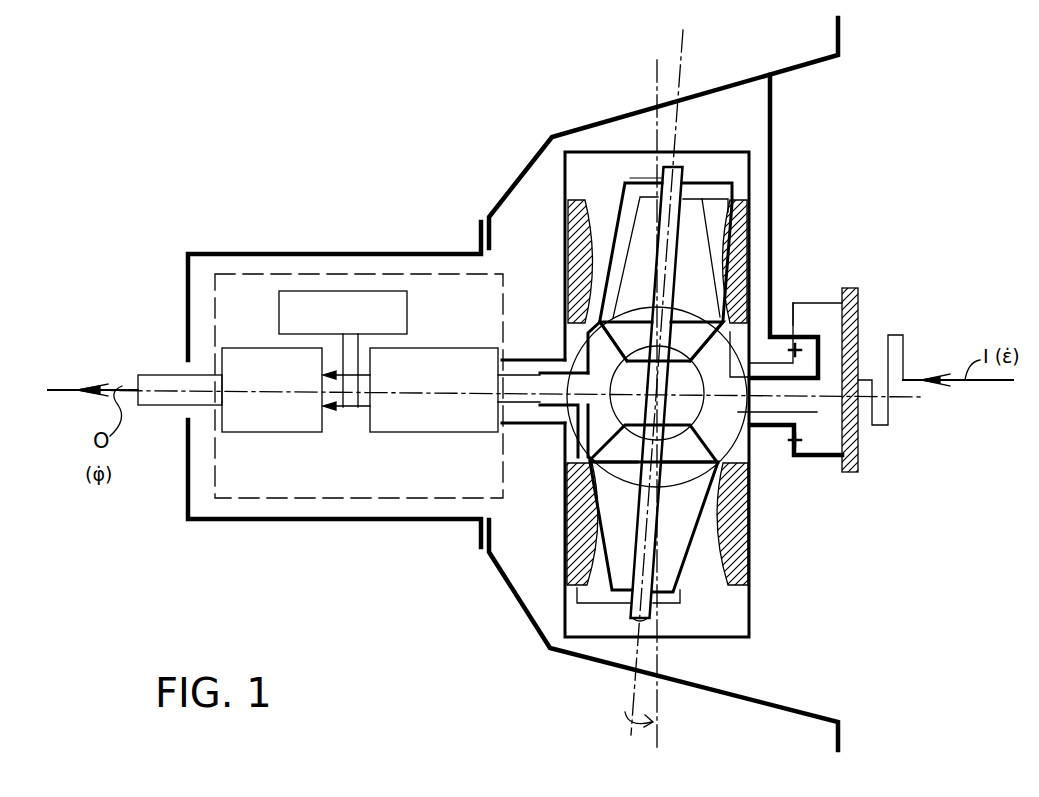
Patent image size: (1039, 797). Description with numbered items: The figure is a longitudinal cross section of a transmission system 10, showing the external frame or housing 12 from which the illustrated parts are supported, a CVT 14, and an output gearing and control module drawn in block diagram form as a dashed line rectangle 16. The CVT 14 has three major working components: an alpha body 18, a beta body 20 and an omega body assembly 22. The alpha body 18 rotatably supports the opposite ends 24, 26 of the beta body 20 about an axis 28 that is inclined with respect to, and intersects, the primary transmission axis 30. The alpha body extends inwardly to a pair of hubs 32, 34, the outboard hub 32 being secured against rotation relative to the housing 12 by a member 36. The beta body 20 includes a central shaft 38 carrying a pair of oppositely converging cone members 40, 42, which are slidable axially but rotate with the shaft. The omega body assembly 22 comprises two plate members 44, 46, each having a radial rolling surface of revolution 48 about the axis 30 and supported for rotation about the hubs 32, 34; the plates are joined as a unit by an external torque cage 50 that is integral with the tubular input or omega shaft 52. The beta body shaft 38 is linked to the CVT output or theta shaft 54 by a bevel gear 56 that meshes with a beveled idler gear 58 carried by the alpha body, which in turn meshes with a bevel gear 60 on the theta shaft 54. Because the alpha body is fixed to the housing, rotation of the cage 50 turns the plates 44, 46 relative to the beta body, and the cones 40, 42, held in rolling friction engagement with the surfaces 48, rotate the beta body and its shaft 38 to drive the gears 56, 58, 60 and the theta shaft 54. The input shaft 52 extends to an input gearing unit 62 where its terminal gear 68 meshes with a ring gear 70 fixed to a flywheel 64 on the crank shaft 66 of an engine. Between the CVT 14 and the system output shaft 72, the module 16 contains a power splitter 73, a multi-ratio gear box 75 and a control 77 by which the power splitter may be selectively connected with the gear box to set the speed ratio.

The transmission system 10 is at (440, 588).
The frame or housing 12 is at (703, 690).
The CVT 14 is at (545, 176).
The output gearing and control module 16 is at (273, 272).
The alpha body 18 is at (688, 177).
The beta body 20 is at (730, 193).
The omega body assembly 22 is at (752, 148).
The end of beta body 24 is at (663, 155).
The end of beta body 26 is at (634, 618).
The axis 28 is at (640, 382).
The primary transmission axis 30 is at (922, 400).
The outboard hub 32 is at (797, 445).
The hub 34 is at (522, 410).
The member 36 is at (772, 118).
The central shaft 38 is at (652, 220).
The cone member 40 is at (704, 210).
The cone member 42 is at (613, 555).
The plate member 44 is at (775, 290).
The plate member 46 is at (572, 262).
The rolling surface of revolution 48 is at (592, 205).
The external torque cage 50 is at (625, 150).
The tubular input or omega shaft 52 is at (762, 427).
The CVT output or theta shaft 54 is at (518, 360).
The bevel gear 56 is at (622, 330).
The beveled idler gear 58 is at (690, 330).
The bevel gear 60 is at (580, 355).
The input gearing unit 62 is at (815, 457).
The flywheel 64 is at (858, 430).
The crank shaft 66 is at (903, 350).
The terminal gear 68 is at (796, 345).
The ring gear 70 is at (788, 322).
The system output shaft 72 is at (176, 384).
The power splitter 73 is at (432, 348).
The multi-ratio gear box 75 is at (280, 432).
The control 77 is at (332, 291).